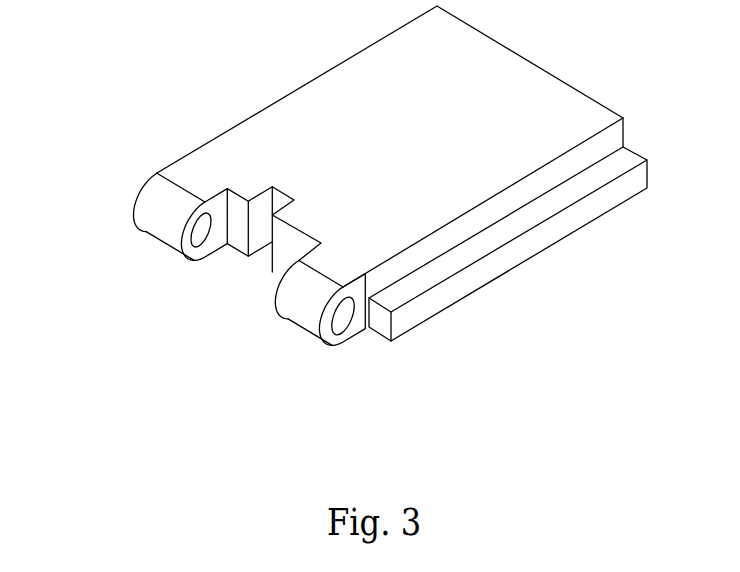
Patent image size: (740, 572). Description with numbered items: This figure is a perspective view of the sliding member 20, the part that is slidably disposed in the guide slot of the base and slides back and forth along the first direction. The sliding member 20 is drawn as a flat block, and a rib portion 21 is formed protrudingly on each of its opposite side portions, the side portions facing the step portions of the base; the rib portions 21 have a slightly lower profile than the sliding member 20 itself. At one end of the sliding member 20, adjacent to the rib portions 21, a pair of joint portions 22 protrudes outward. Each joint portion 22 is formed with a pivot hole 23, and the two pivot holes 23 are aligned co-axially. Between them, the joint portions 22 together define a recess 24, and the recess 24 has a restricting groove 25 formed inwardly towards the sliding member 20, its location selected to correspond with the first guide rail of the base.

The sliding member 20 is at (341, 97).
The rib portion 21 is at (478, 281).
The joint portion 22 is at (153, 222).
The pivot hole 23 is at (344, 318).
The recess 24 is at (236, 267).
The restricting groove 25 is at (267, 200).